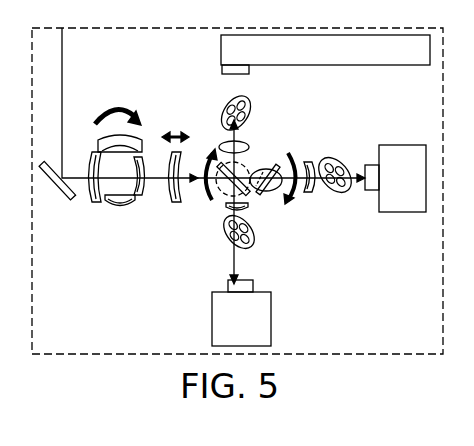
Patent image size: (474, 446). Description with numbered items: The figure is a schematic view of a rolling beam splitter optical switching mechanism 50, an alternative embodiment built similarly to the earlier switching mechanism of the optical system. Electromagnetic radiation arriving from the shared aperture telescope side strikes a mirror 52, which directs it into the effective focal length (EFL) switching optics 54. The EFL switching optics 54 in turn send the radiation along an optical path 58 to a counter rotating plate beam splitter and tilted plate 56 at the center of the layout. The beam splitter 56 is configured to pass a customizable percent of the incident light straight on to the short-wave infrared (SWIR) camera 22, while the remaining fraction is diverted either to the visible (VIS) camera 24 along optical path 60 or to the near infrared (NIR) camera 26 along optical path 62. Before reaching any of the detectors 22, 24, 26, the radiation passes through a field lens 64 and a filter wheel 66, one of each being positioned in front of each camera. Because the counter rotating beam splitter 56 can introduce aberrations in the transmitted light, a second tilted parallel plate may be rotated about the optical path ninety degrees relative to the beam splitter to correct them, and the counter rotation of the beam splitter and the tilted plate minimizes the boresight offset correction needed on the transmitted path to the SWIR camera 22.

The short-wave infrared (SWIR) camera 22 is at (402, 208).
The visible (VIS) camera 24 is at (268, 318).
The near infrared (NIR) camera 26 is at (334, 64).
The rolling beam splitter optical switching mechanism 50 is at (117, 364).
The mirror 52 is at (58, 189).
The effective focal length (EFL) switching optics 54 is at (119, 208).
The counter rotating plate beam splitter and tilted plate 56 is at (247, 162).
The optical path 58 is at (159, 172).
The optical path 60 is at (233, 258).
The optical path 62 is at (227, 140).
The field lens 64 is at (248, 143).
The filter wheel 66 is at (245, 105).